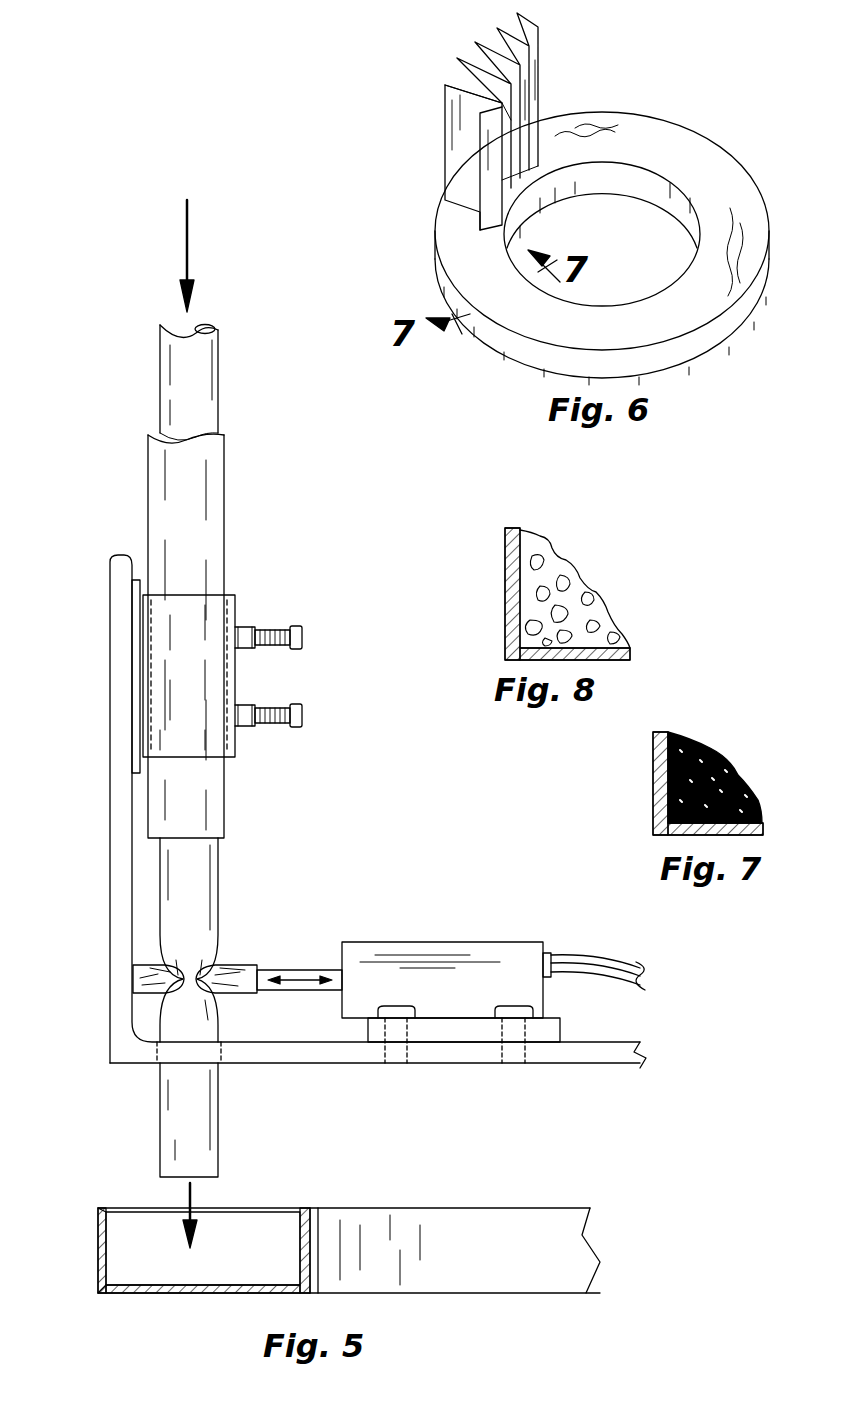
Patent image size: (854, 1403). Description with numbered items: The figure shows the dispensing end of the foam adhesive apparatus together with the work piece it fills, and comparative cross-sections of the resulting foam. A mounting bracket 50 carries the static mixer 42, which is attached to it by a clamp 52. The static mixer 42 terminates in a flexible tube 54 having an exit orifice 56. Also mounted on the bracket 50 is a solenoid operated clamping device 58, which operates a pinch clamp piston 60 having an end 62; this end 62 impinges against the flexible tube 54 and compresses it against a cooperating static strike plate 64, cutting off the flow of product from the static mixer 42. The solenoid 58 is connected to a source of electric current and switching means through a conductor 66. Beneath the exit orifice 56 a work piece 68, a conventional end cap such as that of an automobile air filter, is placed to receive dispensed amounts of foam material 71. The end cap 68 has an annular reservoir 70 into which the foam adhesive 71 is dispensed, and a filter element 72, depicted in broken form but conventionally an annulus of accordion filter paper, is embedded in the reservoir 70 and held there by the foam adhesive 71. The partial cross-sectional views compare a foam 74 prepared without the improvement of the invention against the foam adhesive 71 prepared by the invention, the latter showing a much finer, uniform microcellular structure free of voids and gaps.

In FIG. 5, the static mixer 42 is at (222, 402).
In FIG. 5, the mounting bracket 50 is at (110, 802).
In FIG. 5, the clamp 52 is at (232, 752).
In FIG. 5, the flexible tube 54 is at (222, 864).
In FIG. 5, the exit orifice 56 is at (205, 1177).
In FIG. 5, the solenoid operated clamping device 58 is at (470, 942).
In FIG. 5, the pinch clamp piston 60 is at (300, 968).
In FIG. 5, the end 62 is at (232, 965).
In FIG. 5, the static strike plate 64 is at (158, 993).
In FIG. 5, the conductor 66 is at (592, 952).
In FIG. 5, the work piece 68 is at (180, 1295).
In FIG. 6, the work piece 68 is at (695, 345).
In FIG. 8, the work piece 68 is at (612, 662).
In FIG. 7, the work piece 68 is at (748, 837).
In FIG. 5, the annular reservoir 70 is at (120, 1230).
In FIG. 6, the foam material 71 is at (718, 166).
In FIG. 7, the foam material 71 is at (732, 770).
In FIG. 6, the filter element 72 is at (445, 156).
In FIG. 8, the foam 74 is at (565, 560).